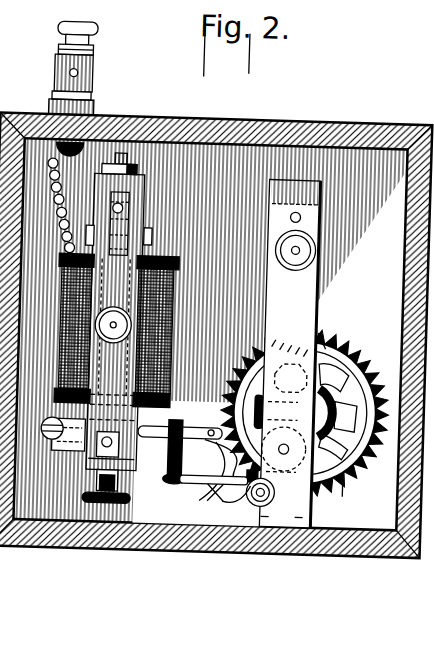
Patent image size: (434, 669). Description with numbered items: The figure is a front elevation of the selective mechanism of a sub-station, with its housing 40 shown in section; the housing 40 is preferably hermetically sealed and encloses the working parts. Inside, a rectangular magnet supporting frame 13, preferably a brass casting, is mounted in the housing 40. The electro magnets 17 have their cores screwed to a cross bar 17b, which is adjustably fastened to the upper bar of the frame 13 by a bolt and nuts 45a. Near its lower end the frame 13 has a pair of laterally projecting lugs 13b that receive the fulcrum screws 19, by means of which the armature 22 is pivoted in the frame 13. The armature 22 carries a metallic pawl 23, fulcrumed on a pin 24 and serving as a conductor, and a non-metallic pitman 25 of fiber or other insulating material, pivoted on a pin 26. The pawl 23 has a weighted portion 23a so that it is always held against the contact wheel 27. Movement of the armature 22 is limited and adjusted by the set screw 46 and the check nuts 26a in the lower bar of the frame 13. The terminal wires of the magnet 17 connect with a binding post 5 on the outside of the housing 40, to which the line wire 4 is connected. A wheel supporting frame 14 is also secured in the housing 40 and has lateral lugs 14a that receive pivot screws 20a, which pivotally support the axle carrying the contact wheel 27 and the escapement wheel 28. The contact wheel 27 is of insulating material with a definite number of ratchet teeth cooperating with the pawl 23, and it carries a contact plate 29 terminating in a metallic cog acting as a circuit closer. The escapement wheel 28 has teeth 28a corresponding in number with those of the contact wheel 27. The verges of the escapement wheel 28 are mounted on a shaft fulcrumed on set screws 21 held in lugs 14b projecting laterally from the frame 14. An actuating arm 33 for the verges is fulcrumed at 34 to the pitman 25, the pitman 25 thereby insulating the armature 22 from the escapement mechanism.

The line wire 4 is at (112, 156).
The binding post 5 is at (49, 70).
The housing 40 is at (216, 322).
The nuts 45a is at (133, 172).
The magnet supporting frame 13 is at (129, 214).
The laterally projecting lugs 13b is at (66, 445).
The electro magnets 17 is at (177, 279).
The cross bar 17b is at (150, 234).
The wheel supporting frame 14 is at (303, 279).
The lateral lugs 14a is at (322, 342).
The lugs 14b is at (253, 500).
The fulcrum screws 19 is at (43, 422).
The check nuts 26a is at (96, 481).
The pin 26 is at (179, 419).
The contact plate 29 is at (232, 405).
The escapement wheel 28 is at (363, 372).
The teeth 28a is at (348, 493).
The pivot screws 20a is at (356, 352).
The set screws 21 is at (281, 515).
The contact wheel 27 is at (338, 511).
The armature 22 is at (180, 421).
The pawl 23 is at (203, 452).
The weighted portion 23a is at (204, 503).
The pin 24 is at (224, 471).
The pitman 25 is at (204, 484).
The actuating arm 33 is at (171, 472).
The fulcrum 34 is at (172, 478).
The set screw 46 is at (150, 509).